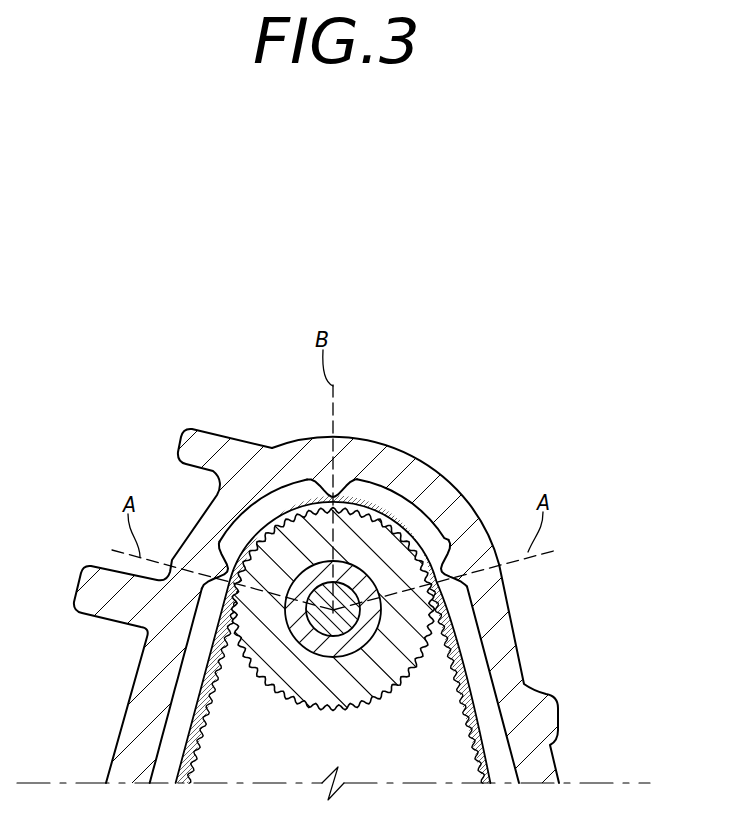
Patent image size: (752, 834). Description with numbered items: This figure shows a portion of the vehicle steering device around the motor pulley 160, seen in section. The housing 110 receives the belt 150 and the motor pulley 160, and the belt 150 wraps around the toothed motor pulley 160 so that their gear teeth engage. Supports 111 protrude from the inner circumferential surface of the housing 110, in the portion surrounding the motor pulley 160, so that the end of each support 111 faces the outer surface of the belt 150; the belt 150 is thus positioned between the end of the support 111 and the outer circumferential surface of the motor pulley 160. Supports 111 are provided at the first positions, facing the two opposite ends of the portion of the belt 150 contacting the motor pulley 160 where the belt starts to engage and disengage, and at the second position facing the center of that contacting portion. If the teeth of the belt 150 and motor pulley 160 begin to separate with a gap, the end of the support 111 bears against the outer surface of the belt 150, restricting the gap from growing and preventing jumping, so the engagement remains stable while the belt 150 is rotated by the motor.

The housing 110 is at (153, 690).
The support 111 is at (344, 484).
The belt 150 is at (477, 716).
The motor pulley 160 is at (402, 632).